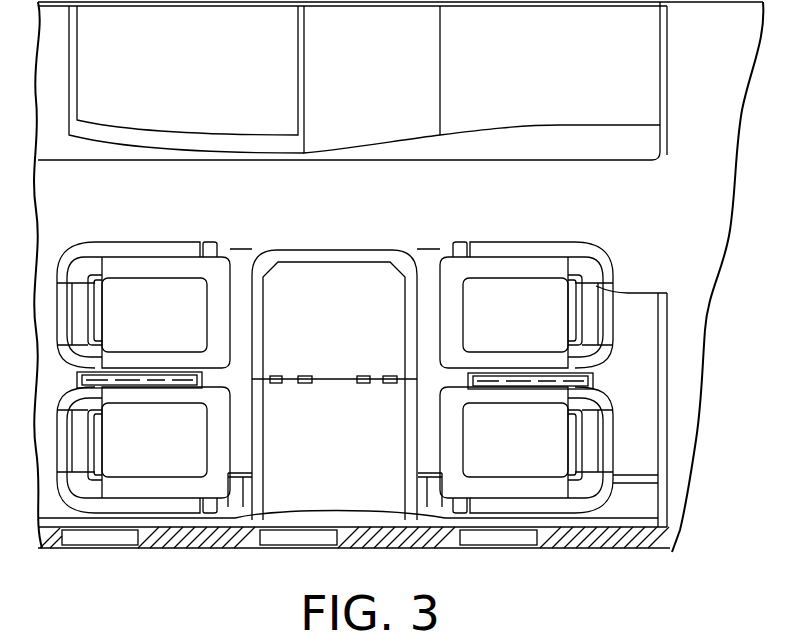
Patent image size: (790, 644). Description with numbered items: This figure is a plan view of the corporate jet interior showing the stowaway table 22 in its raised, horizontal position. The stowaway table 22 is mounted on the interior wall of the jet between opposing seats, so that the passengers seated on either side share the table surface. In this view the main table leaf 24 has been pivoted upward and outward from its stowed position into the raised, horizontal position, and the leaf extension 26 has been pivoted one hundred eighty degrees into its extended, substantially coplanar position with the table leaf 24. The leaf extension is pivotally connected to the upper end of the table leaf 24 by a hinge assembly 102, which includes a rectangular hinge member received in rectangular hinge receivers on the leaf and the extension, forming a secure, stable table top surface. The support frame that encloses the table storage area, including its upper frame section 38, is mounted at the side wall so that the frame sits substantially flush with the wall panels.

The stowaway table 22 is at (369, 338).
The main table leaf 24 is at (312, 473).
The leaf extension 26 is at (332, 287).
The upper frame section 38 is at (367, 518).
The hinge assembly 102 is at (358, 375).